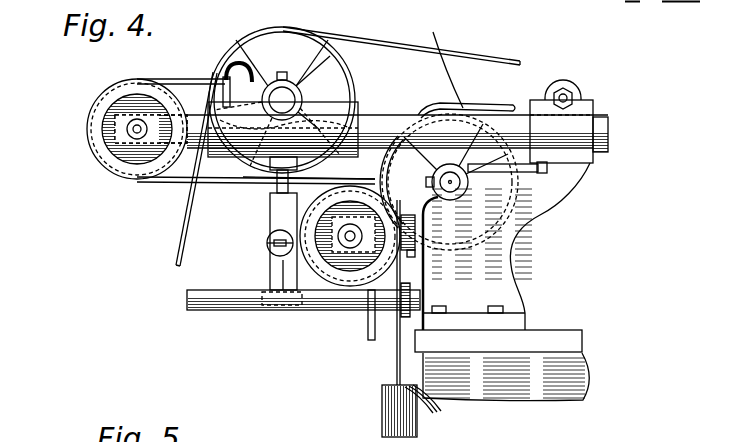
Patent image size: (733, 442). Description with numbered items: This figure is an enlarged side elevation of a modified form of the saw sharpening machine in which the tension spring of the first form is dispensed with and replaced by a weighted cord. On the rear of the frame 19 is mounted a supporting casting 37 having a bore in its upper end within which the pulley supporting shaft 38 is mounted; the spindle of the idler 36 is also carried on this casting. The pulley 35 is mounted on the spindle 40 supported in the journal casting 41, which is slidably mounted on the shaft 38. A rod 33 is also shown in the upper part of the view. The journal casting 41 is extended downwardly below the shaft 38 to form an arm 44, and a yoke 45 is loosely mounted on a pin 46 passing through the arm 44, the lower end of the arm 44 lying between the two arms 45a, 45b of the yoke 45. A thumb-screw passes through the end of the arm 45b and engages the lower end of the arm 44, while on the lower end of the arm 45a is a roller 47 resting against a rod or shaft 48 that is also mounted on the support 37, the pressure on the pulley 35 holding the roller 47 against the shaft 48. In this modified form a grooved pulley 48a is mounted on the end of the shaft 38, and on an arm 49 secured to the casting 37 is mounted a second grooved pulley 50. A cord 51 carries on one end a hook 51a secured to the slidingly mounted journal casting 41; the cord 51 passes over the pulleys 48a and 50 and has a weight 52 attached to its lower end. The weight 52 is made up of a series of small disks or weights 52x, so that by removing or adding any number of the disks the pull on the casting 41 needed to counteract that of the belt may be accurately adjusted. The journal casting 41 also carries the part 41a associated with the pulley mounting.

The frame 19 is at (563, 380).
The rod 33 is at (449, 52).
The pulley 35 is at (252, 40).
The idler 36 is at (432, 151).
The supporting casting 37 is at (560, 188).
The pulley supporting shaft 38 is at (377, 121).
The spindle 40 is at (282, 71).
The journal casting 41 is at (315, 116).
The arm 41a is at (302, 88).
The arm 44 is at (328, 158).
The yoke 45 is at (246, 175).
The arm of the yoke 45a is at (280, 272).
The arm of the yoke 45b is at (280, 203).
The pin 46 is at (267, 243).
The roller 47 is at (271, 307).
The rod or shaft 48 is at (218, 297).
The grooved pulley 48a is at (122, 90).
The arm 49 is at (413, 255).
The grooved pulley 50 is at (343, 270).
The cord 51 is at (237, 182).
The hook 51a is at (236, 70).
The weight 52 is at (382, 410).
The small disks or weights 52x is at (437, 408).